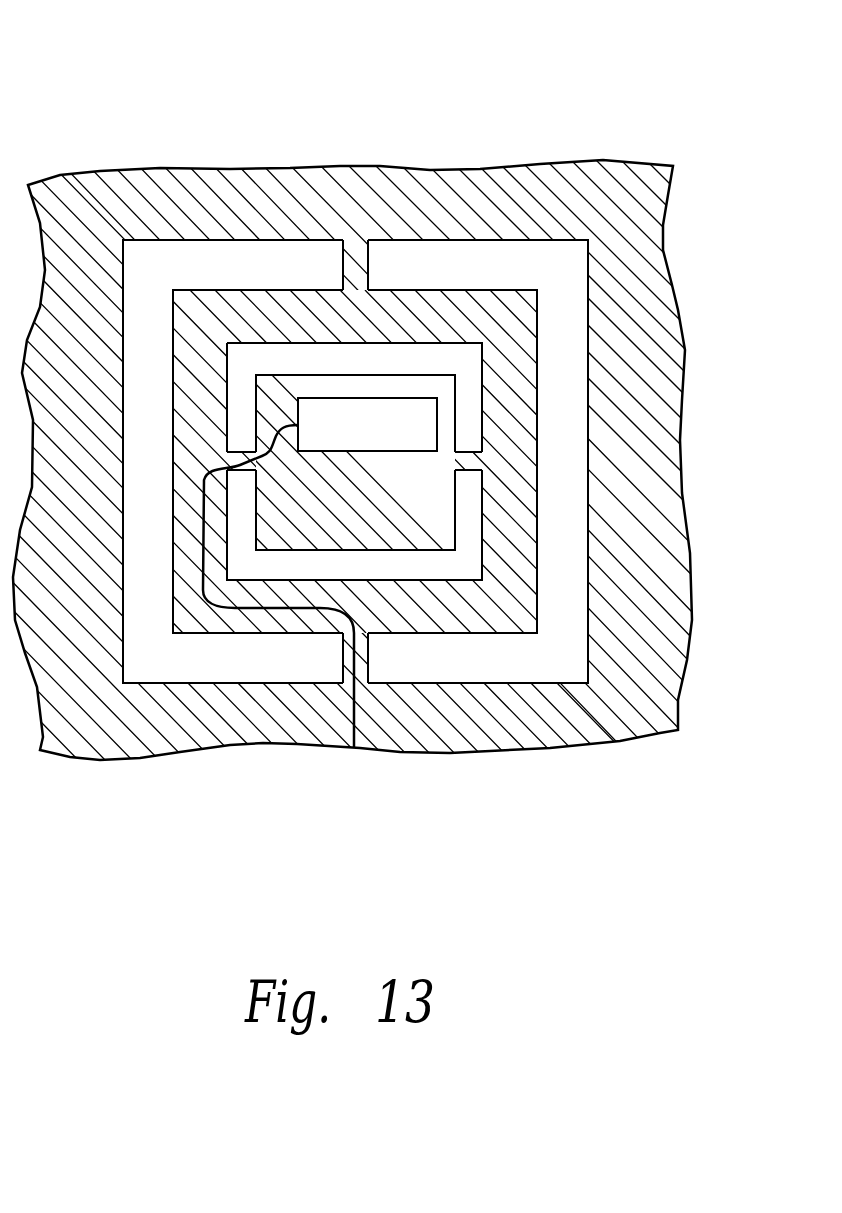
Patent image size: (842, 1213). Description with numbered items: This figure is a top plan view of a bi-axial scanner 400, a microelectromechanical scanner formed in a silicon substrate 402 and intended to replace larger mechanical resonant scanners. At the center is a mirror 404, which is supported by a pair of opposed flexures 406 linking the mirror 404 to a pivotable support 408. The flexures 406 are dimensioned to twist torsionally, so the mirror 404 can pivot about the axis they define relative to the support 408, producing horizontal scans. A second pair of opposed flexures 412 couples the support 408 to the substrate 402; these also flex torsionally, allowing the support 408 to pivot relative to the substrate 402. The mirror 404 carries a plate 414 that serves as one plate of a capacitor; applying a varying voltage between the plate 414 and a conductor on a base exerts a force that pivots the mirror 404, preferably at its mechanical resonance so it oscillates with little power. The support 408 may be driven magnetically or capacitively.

The bi-axial scanner 400 is at (230, 78).
The silicon substrate 402 is at (600, 162).
The mirror 404 is at (378, 515).
The flexures 406 is at (235, 470).
The pivotable support 408 is at (538, 458).
The flexures 412 is at (368, 265).
The plate 414 is at (398, 397).